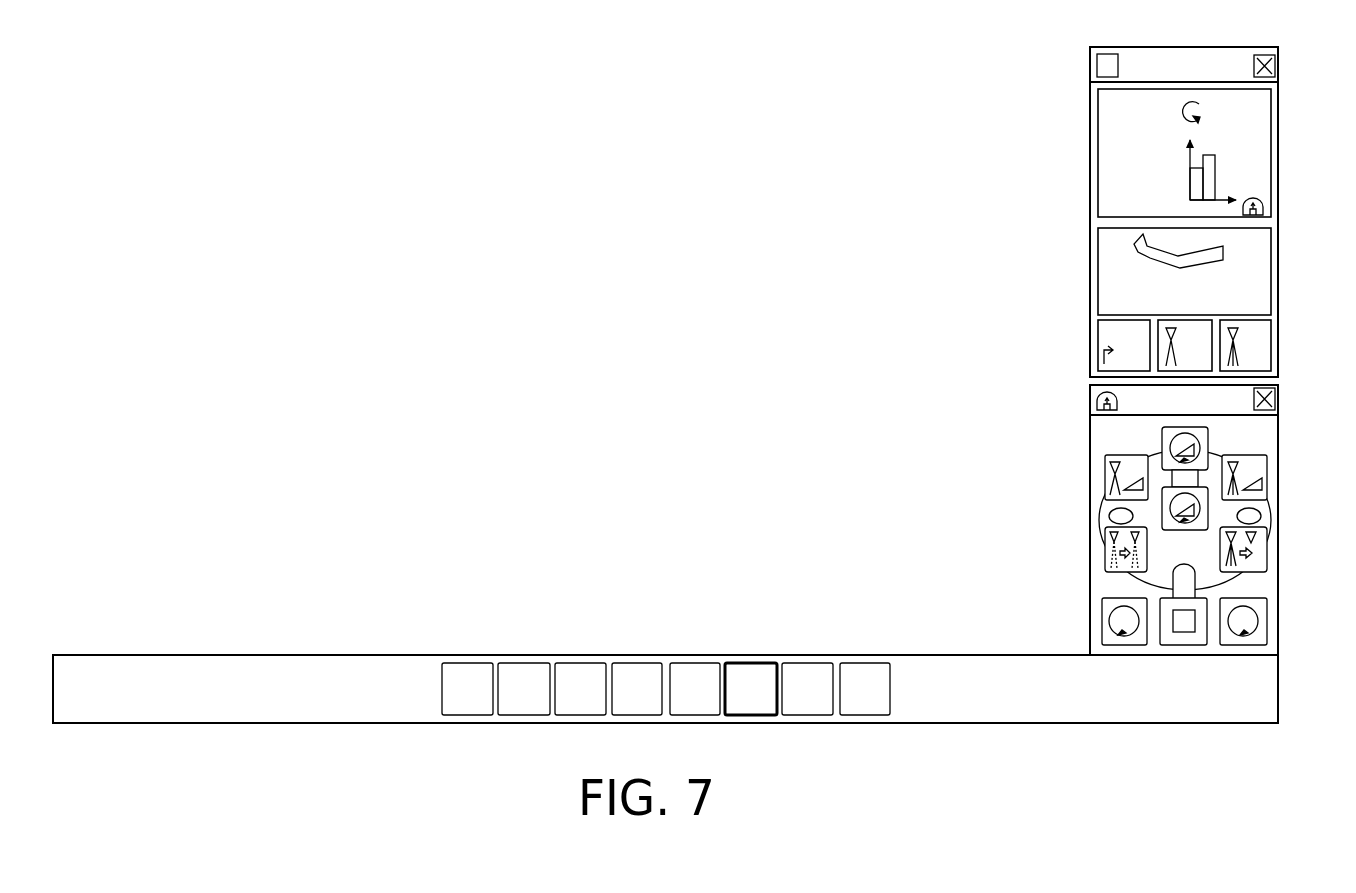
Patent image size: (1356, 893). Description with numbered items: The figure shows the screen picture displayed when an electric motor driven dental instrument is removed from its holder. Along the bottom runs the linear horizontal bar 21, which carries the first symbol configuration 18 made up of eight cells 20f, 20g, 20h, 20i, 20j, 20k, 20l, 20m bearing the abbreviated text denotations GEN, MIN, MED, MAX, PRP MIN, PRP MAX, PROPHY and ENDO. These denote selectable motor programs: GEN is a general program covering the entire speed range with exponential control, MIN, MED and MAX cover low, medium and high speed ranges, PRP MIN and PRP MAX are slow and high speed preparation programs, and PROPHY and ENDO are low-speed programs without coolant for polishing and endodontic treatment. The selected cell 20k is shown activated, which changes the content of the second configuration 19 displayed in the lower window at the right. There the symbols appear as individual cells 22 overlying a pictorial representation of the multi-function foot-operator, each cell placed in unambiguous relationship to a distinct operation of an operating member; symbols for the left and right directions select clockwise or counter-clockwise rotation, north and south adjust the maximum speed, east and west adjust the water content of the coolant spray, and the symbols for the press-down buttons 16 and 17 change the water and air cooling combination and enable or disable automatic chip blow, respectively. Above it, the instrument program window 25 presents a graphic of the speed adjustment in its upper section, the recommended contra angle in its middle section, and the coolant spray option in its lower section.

The press-down button 16 is at (1105, 548).
The press-down button 17 is at (1268, 548).
The first symbol configuration 18 is at (267, 628).
The second configuration 19 is at (1052, 492).
The cell 20f is at (467, 663).
The cell 20g is at (523, 663).
The cell 20h is at (580, 663).
The cell 20i is at (638, 663).
The cell 20j is at (692, 663).
The cell 20k is at (748, 663).
The cell 20l is at (808, 663).
The cell 20m is at (863, 663).
The linear horizontal bar 21 is at (364, 667).
The cell 22 is at (1106, 462).
The instrument program window 25 is at (1048, 266).